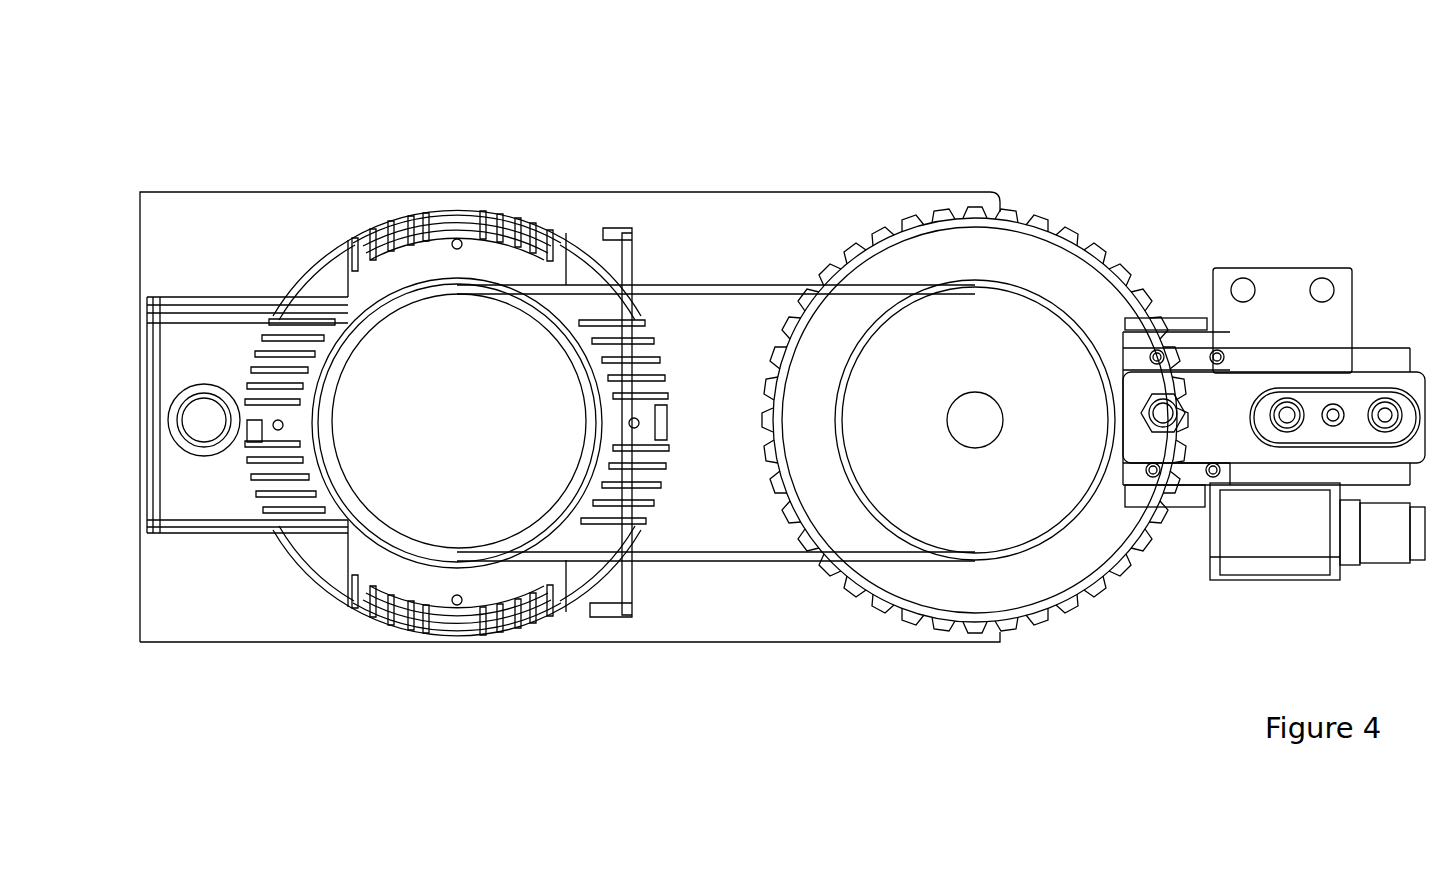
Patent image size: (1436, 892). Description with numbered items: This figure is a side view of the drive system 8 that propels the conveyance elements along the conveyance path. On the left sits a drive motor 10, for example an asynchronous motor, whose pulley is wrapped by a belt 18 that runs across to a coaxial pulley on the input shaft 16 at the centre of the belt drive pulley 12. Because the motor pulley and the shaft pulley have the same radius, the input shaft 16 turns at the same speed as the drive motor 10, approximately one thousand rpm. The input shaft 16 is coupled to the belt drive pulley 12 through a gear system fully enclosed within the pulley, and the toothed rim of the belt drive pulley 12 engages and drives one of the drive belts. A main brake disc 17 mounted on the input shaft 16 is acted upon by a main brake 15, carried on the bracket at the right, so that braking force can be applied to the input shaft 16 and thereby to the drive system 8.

The drive system 8 is at (702, 710).
The drive motor 10 is at (333, 292).
The belt drive pulley 12 is at (975, 419).
The main brake 15 is at (1290, 325).
The input shaft 16 is at (977, 418).
The main brake disc 17 is at (1075, 292).
The belt 18 is at (693, 284).